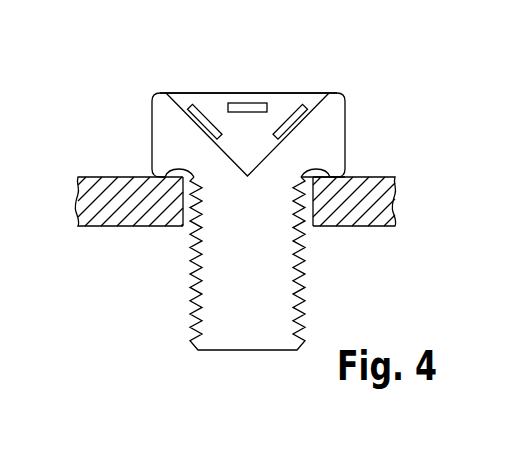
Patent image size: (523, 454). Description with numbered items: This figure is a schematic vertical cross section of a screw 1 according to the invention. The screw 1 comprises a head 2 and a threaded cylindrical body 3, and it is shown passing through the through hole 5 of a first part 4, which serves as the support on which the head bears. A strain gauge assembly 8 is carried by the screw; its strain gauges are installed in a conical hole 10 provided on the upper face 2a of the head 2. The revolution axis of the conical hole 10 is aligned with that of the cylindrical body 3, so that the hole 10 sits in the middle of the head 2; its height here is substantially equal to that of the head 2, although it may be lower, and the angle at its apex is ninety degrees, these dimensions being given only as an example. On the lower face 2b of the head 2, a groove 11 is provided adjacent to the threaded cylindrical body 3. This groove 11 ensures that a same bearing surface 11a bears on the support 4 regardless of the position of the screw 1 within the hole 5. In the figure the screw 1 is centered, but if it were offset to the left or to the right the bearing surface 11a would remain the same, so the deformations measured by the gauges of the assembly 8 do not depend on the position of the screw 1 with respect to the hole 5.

The screw 1 is at (136, 71).
The head 2 is at (345, 110).
The upper face 2a is at (157, 93).
The lower face 2b is at (154, 178).
The threaded cylindrical body 3 is at (308, 298).
The first part 4 is at (376, 207).
The through hole 5 is at (313, 182).
The strain gauge assembly 8 is at (203, 112).
The conical hole 10 is at (292, 93).
The groove 11 is at (316, 171).
The bearing surface 11a is at (333, 180).